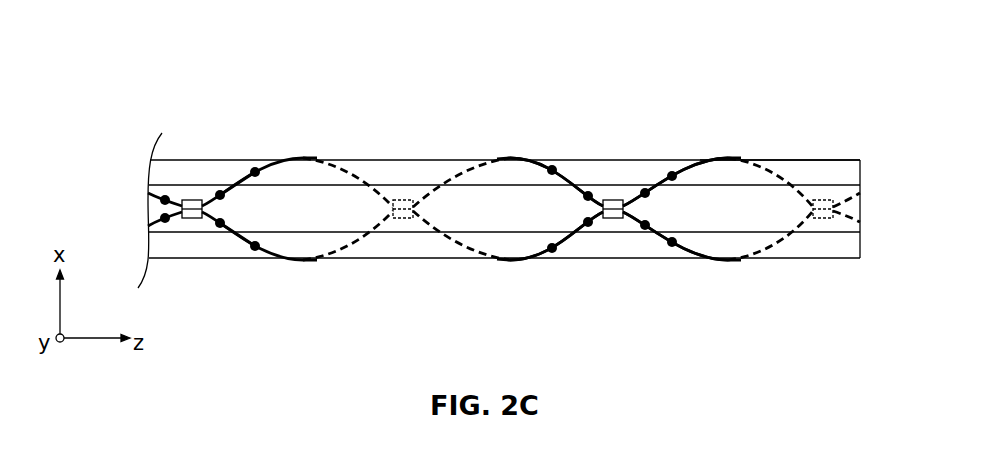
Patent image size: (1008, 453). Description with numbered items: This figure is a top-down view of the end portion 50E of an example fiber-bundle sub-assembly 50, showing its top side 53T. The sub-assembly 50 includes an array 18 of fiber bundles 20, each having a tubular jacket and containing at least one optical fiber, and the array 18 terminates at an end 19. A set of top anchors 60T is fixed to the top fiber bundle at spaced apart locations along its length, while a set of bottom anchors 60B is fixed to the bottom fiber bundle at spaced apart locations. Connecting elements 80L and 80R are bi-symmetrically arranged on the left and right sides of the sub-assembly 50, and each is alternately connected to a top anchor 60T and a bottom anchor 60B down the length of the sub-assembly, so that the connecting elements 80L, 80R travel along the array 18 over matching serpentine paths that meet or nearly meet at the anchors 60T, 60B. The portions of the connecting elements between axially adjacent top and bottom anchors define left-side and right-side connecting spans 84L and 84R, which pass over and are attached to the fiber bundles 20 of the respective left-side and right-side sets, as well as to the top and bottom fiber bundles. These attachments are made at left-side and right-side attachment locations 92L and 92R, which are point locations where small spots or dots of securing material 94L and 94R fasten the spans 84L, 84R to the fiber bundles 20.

The fiber-bundle sub-assembly 50 is at (175, 82).
The end portion 50E is at (713, 122).
The array 18 is at (775, 148).
The end 19 is at (882, 177).
The fiber bundle 20 is at (477, 195).
The top side 53T is at (717, 200).
The top anchor 60T is at (191, 200).
The bottom anchor 60B is at (404, 218).
The right-side connecting element 80R is at (532, 160).
The left-side connecting element 80L is at (540, 258).
The right-side connecting span 84R is at (279, 160).
The left-side connecting span 84L is at (277, 252).
The right-side attachment location 92R is at (243, 165).
The left-side attachment location 92L is at (262, 255).
The right-side securing material 94R is at (255, 168).
The left-side securing material 94L is at (255, 247).